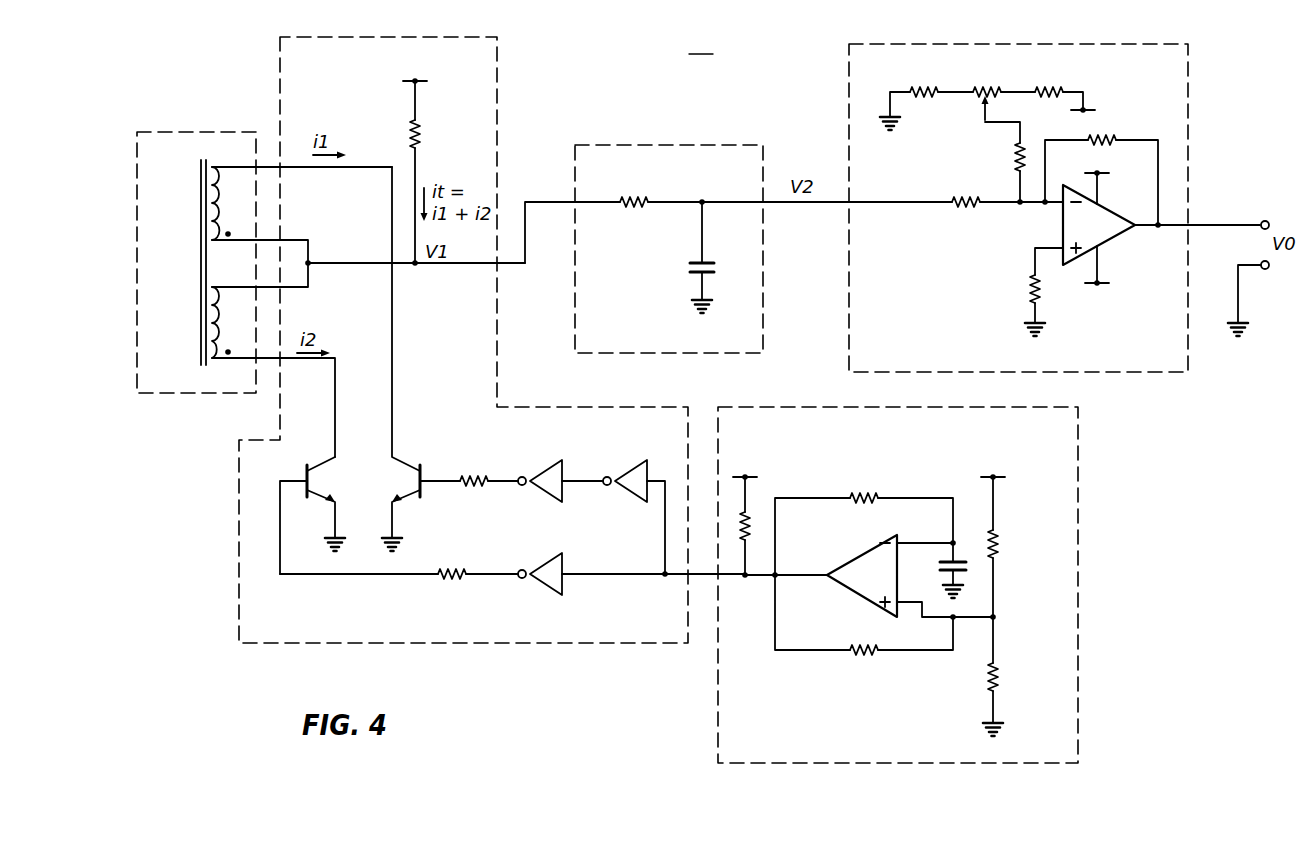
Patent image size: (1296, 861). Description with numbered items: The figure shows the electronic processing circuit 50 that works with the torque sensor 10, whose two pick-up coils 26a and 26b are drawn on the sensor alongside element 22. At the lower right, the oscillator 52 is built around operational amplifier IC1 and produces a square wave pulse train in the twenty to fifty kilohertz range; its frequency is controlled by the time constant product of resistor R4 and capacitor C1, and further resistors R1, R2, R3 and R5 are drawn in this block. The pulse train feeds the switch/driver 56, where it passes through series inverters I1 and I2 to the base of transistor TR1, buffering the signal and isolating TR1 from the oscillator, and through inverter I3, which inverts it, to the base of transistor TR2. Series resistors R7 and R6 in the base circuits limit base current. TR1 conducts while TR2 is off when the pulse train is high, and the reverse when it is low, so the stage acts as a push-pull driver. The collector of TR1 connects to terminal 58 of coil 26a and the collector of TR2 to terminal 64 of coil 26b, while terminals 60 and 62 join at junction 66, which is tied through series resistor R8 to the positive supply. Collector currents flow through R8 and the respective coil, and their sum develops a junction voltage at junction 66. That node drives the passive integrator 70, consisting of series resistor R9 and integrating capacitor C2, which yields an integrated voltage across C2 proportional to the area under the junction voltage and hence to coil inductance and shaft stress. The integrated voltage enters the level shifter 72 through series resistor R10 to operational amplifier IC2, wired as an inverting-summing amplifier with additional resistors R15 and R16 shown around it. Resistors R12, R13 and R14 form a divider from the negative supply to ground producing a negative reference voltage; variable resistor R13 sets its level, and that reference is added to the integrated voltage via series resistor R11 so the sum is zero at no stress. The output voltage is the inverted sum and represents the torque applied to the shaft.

The torque sensor 10 is at (170, 132).
The magnetic core 22 is at (200, 256).
The pick-up coil 26a is at (206, 192).
The pick-up coil 26b is at (210, 318).
The terminal 58 is at (238, 166).
The terminal 60 is at (245, 238).
The terminal 62 is at (245, 289).
The terminal 64 is at (226, 366).
The junction 66 is at (310, 262).
The electronic processing circuit 50 is at (702, 43).
The oscillator circuit 52 is at (1080, 556).
The switch/driver circuit 56 is at (474, 645).
The integrator circuit 70 is at (663, 147).
The level shifter circuit 72 is at (1114, 373).
The resistor R1 is at (998, 540).
The resistor R2 is at (998, 668).
The resistor R3 is at (856, 648).
The resistor R4 is at (852, 494).
The resistor R5 is at (752, 528).
The series resistor R6 is at (450, 568).
The series resistor R7 is at (468, 474).
The series resistor R8 is at (424, 132).
The series resistor R9 is at (626, 198).
The series resistor R10 is at (956, 196).
The series resistor R11 is at (1016, 150).
The resistor R12 is at (922, 90).
The variable resistor R13 is at (986, 90).
The resistor R14 is at (1054, 90).
The resistor R15 is at (1112, 138).
The resistor R16 is at (1030, 284).
The capacitor C1 is at (958, 560).
The integrating capacitor C2 is at (694, 262).
The operational amplifier IC1 is at (856, 566).
The operational amplifier IC2 is at (1060, 222).
The transistor TR1 is at (426, 464).
The transistor TR2 is at (308, 465).
The inverter I1 is at (630, 462).
The inverter I2 is at (544, 462).
The inverter I3 is at (540, 566).